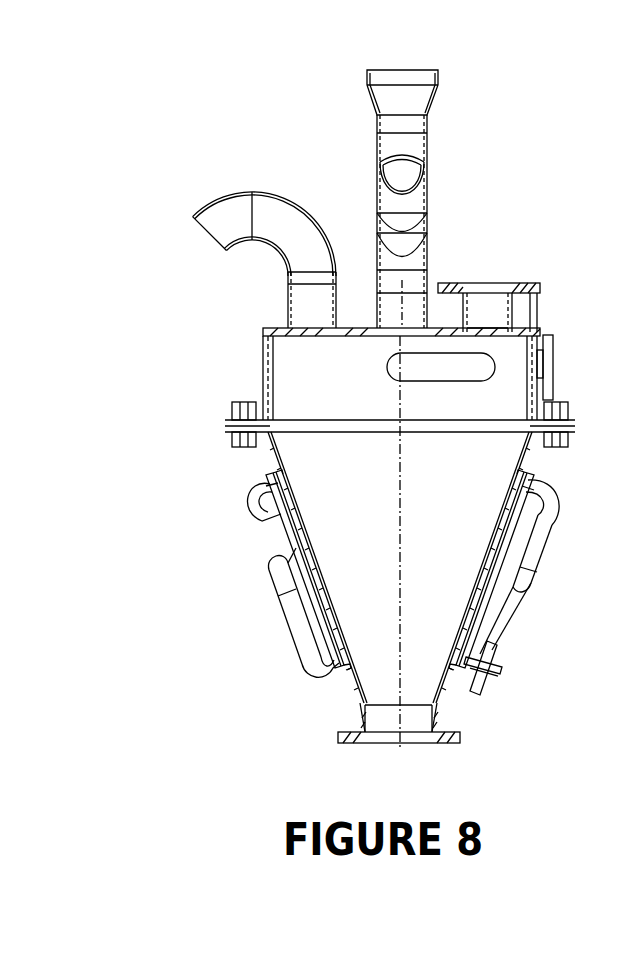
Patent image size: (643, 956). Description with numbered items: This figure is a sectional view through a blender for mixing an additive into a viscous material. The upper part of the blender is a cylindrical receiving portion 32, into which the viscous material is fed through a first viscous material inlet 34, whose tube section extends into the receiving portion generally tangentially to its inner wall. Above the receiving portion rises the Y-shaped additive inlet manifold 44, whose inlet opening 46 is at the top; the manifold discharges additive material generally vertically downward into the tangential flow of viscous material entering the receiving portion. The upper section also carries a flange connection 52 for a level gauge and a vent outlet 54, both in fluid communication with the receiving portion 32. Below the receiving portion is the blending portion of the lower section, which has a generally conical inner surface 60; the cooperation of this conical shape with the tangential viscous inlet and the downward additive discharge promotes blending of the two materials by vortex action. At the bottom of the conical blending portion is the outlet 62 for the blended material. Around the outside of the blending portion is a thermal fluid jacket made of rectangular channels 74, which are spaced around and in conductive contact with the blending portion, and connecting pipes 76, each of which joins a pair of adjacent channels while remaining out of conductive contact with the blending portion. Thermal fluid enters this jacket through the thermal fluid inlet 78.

The cylindrical receiving portion 32 is at (298, 370).
The first viscous material inlet 34 is at (562, 367).
The Y-shaped additive inlet manifold 44 is at (432, 196).
The inlet opening 46 is at (412, 66).
The flange connection 52 is at (505, 286).
The vent outlet 54 is at (275, 190).
The generally conical inner surface 60 is at (303, 511).
The outlet 62 is at (374, 747).
The rectangular channels 74 is at (280, 533).
The connecting pipes 76 is at (248, 511).
The thermal fluid inlet 78 is at (503, 676).